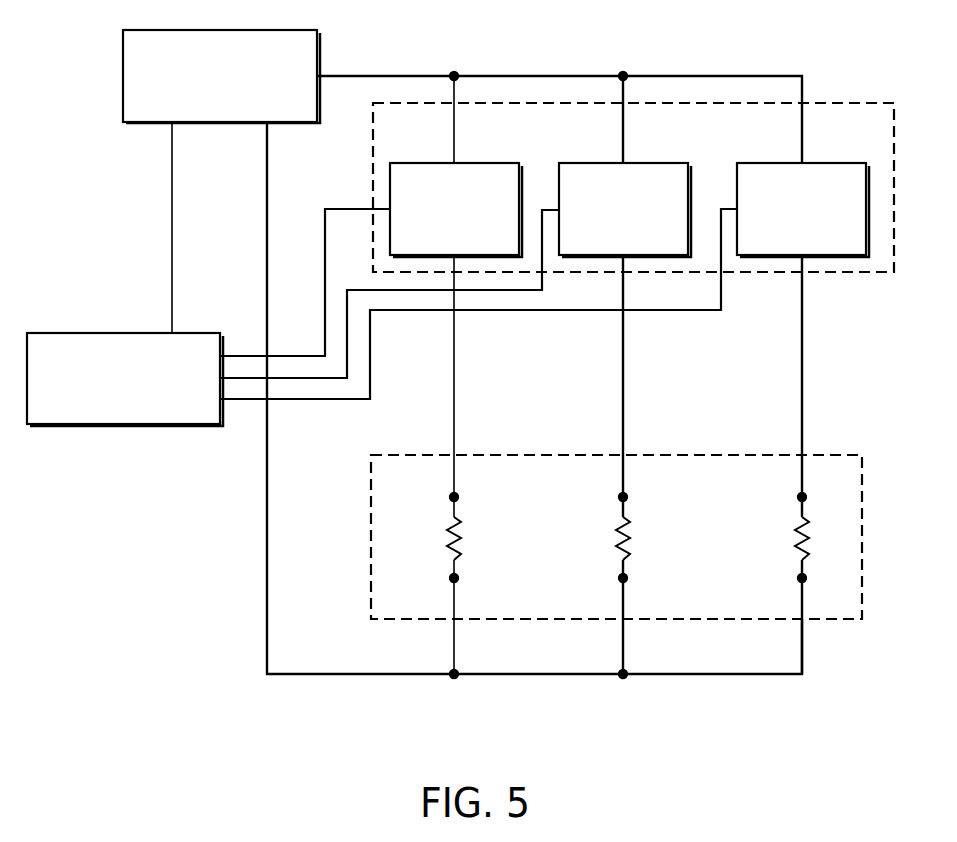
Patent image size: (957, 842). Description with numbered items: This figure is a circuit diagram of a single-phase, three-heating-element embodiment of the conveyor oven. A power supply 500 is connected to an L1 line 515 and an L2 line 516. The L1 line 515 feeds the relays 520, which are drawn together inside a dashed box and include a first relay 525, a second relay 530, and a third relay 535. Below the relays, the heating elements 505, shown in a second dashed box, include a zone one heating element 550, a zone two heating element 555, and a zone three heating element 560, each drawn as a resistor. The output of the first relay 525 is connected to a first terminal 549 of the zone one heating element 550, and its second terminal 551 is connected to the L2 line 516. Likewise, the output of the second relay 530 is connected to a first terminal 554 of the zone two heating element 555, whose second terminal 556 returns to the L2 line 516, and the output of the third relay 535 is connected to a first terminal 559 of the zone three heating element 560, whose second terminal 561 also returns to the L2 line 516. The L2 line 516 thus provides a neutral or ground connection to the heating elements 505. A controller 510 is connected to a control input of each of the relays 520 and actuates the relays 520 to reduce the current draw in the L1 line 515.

The two-phase power supply 500 is at (123, 76).
The heating elements 505 is at (538, 453).
The controller 510 is at (122, 332).
The L1 line 515 is at (558, 74).
The L2 line 516 is at (268, 240).
The relays 520 is at (848, 102).
The first relay 525 is at (481, 162).
The second relay 530 is at (650, 162).
The third relay 535 is at (832, 162).
The first terminal 549 is at (450, 497).
The zone 1 heating element 550 is at (449, 539).
The second terminal 551 is at (450, 578).
The first terminal 554 is at (619, 497).
The zone 2 heating element 555 is at (618, 539).
The second terminal 556 is at (619, 578).
The first terminal 559 is at (798, 497).
The zone 3 heating element 560 is at (797, 539).
The second terminal 561 is at (798, 578).